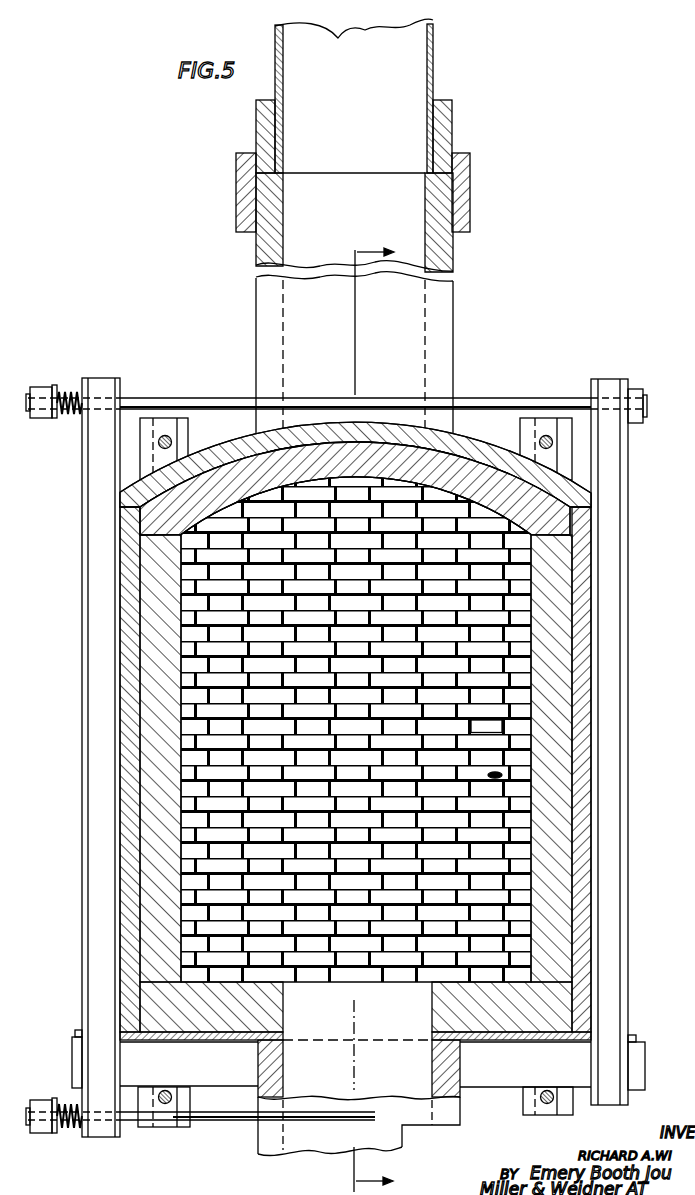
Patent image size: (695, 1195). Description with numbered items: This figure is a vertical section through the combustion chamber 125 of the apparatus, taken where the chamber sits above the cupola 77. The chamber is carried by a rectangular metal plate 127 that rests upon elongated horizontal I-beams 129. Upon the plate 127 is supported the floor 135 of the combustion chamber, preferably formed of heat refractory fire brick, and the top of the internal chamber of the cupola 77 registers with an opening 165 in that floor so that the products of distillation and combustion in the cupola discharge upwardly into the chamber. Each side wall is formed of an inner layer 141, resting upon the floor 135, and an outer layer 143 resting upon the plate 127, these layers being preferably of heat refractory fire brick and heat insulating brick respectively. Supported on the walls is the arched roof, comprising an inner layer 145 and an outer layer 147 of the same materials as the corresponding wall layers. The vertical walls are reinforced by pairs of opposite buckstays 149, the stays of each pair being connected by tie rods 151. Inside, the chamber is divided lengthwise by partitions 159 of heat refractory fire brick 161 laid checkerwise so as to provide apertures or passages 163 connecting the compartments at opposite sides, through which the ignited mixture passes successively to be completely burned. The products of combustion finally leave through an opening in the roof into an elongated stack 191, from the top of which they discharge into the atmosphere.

The stack 191 is at (433, 53).
The outer layer of arched roof 147 is at (460, 445).
The inner layer of arched roof 145 is at (475, 470).
The tie rods 151 is at (182, 398).
The buckstays 149 is at (188, 435).
The combustion chamber 125 is at (359, 607).
The fire brick 161 is at (498, 712).
The apertures or passages 163 is at (497, 730).
The partitions 159 is at (503, 775).
The inner layer of side wall 141 is at (150, 857).
The outer layer of side wall 143 is at (128, 811).
The floor of combustion chamber 135 is at (265, 1013).
The opening in combustion chamber floor 165 is at (432, 1003).
The rectangular metal plate 127 is at (525, 1037).
The I-beams 129 is at (506, 1090).
The cupola 77 is at (321, 1143).